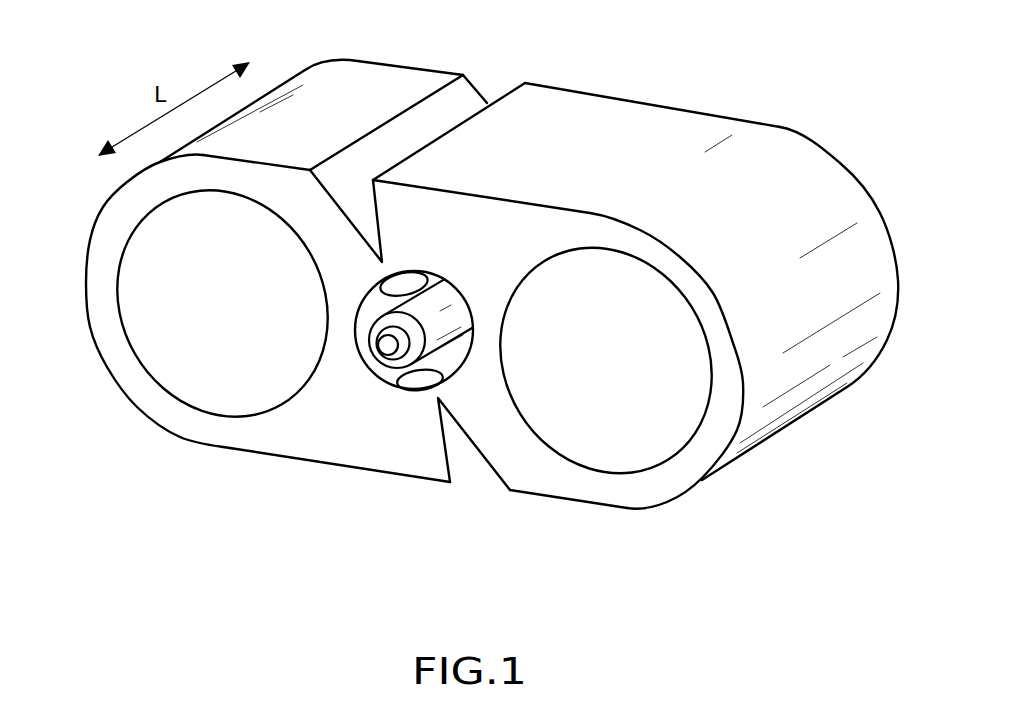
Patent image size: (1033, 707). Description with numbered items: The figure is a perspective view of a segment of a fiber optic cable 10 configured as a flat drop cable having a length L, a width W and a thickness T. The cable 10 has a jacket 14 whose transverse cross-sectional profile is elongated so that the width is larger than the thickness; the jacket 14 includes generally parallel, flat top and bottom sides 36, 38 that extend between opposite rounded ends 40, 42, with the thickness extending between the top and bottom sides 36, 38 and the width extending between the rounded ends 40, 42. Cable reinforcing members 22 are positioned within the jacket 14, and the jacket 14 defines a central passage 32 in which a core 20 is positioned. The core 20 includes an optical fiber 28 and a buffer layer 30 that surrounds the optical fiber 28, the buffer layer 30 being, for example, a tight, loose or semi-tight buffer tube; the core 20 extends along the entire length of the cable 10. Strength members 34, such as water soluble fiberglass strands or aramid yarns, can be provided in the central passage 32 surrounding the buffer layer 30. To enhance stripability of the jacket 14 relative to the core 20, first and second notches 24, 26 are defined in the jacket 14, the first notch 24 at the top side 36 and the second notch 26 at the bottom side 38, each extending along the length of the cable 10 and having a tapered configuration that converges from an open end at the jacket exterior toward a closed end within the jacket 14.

The fiber optic cable 10 is at (818, 124).
The jacket 14 is at (473, 332).
The core 20 is at (387, 370).
The cable reinforcing members 22 is at (415, 333).
The first notch 24 is at (476, 92).
The second notch 26 is at (488, 482).
The optical fiber 28 is at (385, 348).
The buffer layer 30 is at (441, 302).
The central passage 32 is at (371, 312).
The strength members 34 is at (410, 287).
The top side 36 is at (605, 103).
The bottom side 38 is at (396, 475).
The rounded end 40 is at (97, 236).
The rounded end 42 is at (857, 263).